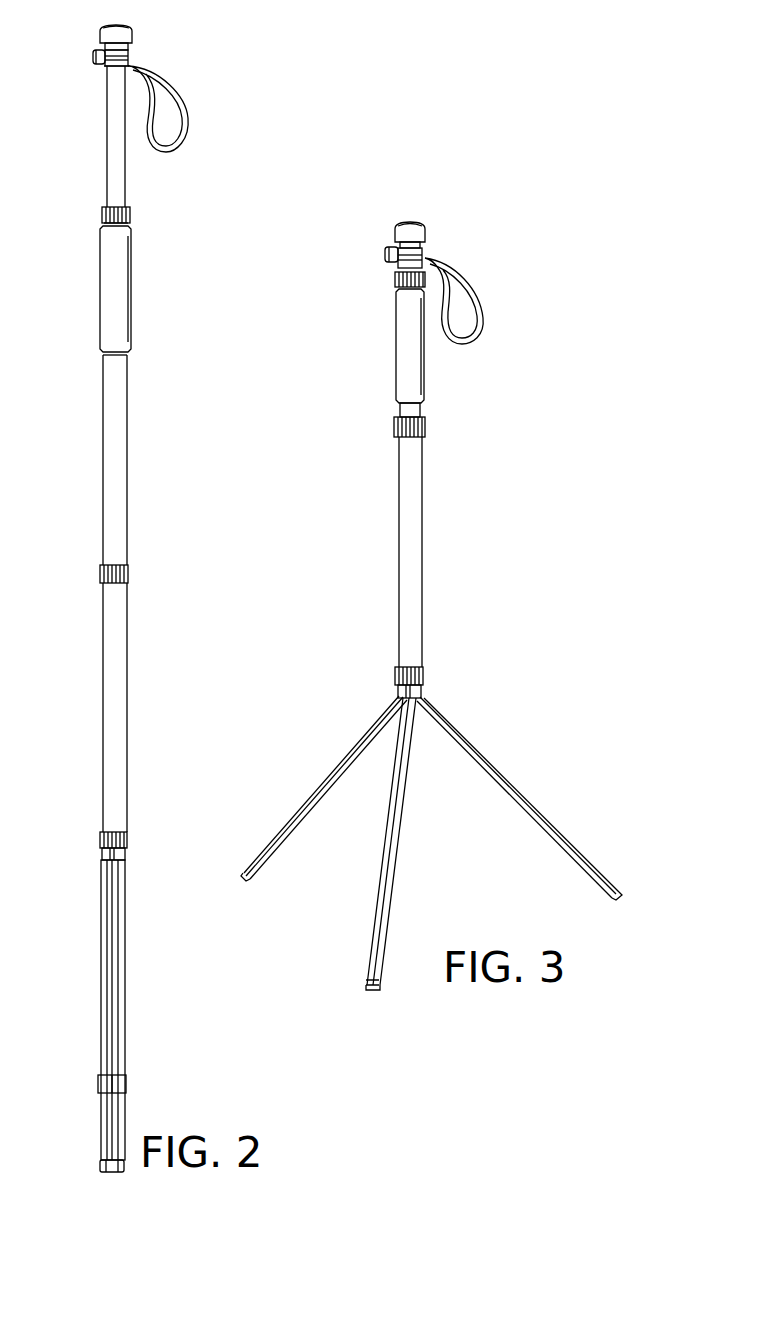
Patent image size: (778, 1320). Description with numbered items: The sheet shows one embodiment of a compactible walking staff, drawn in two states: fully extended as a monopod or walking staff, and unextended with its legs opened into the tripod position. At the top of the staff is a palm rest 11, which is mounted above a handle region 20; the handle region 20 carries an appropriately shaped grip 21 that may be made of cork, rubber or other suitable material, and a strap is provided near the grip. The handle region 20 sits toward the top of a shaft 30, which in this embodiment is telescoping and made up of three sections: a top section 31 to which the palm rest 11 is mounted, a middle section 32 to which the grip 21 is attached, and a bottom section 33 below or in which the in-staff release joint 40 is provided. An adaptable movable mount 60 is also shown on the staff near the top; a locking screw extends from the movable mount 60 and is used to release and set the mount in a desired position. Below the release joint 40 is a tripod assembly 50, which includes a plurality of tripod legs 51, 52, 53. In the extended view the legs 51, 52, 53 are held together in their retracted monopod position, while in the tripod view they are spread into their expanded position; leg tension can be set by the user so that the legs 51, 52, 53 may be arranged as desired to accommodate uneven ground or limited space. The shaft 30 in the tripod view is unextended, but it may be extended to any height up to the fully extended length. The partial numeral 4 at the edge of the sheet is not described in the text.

In FIG. 2, the pole assembly (partial numeral) 4 is at (5, 234).
In FIG. 3, the palm rest 11 is at (419, 222).
In FIG. 2, the handle region 20 is at (146, 276).
In FIG. 3, the handle region 20 is at (373, 330).
In FIG. 2, the grip 21 is at (131, 307).
In FIG. 3, the grip 21 is at (424, 381).
In FIG. 2, the shaft 30 is at (156, 573).
In FIG. 3, the shaft 30 is at (462, 493).
In FIG. 2, the top section 31 is at (93, 142).
In FIG. 2, the middle section 32 is at (93, 418).
In FIG. 2, the bottom section 33 is at (93, 735).
In FIG. 3, the in-staff release joint 40 is at (433, 670).
In FIG. 2, the tripod assembly 50 is at (91, 1014).
In FIG. 3, the tripod assembly 50 is at (431, 818).
In FIG. 3, the tripod leg 51 is at (396, 860).
In FIG. 3, the tripod leg 52 is at (523, 791).
In FIG. 3, the tripod leg 53 is at (332, 768).
In FIG. 2, the movable mount 60 is at (152, 47).